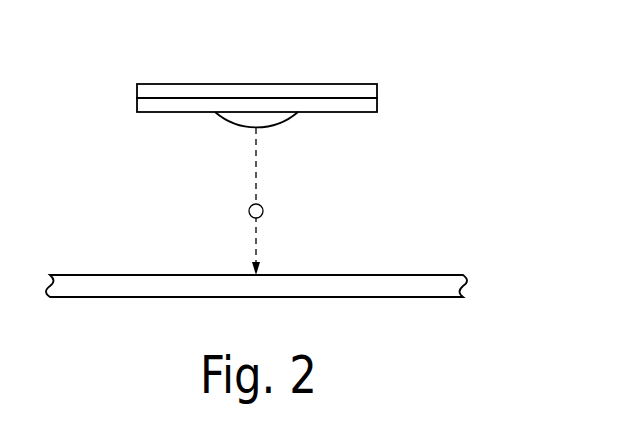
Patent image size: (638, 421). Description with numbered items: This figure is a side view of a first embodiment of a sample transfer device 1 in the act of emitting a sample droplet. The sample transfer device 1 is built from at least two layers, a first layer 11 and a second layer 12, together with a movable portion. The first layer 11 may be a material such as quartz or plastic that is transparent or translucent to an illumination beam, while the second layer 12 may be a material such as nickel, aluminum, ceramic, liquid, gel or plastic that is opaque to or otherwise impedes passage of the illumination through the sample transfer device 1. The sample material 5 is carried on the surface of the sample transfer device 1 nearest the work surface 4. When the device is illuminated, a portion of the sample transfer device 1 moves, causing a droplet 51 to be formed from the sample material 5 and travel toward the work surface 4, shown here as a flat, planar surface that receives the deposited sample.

The sample transfer device 1 is at (238, 45).
The first layer 11 is at (377, 91).
The second layer 12 is at (377, 104).
The sample material 5 is at (283, 121).
The droplet 51 is at (263, 213).
The work surface 4 is at (420, 275).